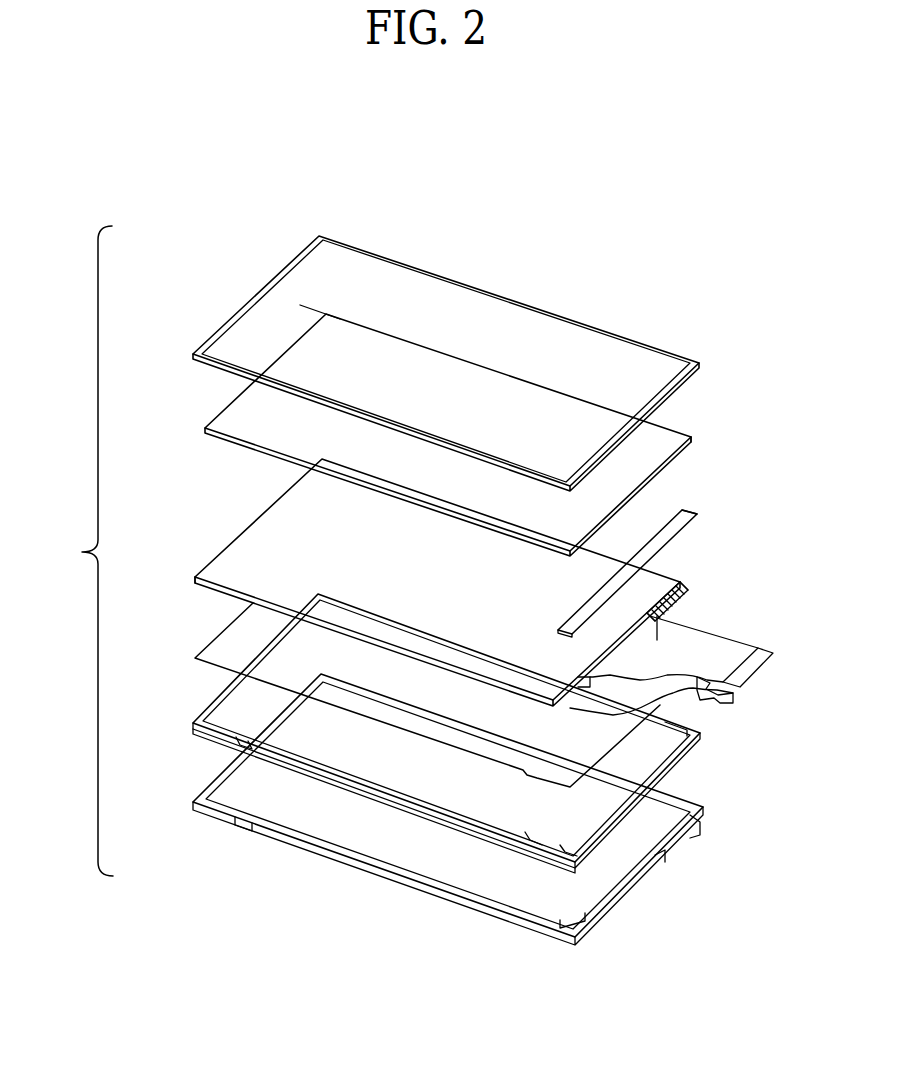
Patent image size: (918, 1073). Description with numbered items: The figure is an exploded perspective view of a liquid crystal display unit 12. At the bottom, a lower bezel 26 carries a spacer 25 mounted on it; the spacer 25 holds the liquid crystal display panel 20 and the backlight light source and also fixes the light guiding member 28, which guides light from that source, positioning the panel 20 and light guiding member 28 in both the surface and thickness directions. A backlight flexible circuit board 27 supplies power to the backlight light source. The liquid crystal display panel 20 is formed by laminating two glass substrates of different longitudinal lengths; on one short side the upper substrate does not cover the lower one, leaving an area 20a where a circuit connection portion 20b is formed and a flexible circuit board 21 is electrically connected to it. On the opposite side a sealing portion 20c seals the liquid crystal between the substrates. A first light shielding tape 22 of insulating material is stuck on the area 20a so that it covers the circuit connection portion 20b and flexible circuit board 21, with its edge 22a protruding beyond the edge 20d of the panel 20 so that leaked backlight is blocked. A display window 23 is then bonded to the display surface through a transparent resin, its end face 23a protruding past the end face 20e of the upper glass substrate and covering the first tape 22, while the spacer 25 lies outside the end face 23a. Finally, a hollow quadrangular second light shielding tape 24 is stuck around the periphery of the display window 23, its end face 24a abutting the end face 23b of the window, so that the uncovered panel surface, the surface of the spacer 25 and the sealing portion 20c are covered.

The liquid crystal display unit 12 is at (77, 551).
The liquid crystal display panel 20 is at (468, 582).
The area 20a is at (705, 600).
The circuit connection portion 20b is at (655, 608).
The sealing portion 20c is at (193, 570).
The edge of the liquid crystal display panel 20d is at (690, 611).
The end face of the upper glass substrate 20e is at (688, 586).
The flexible circuit board 21 is at (760, 668).
The first light shielding tape 22 is at (671, 547).
The edge of the first light shielding tape 22a is at (703, 523).
The display window 23 is at (470, 404).
The end face of the display window 23a is at (700, 452).
The end face of the display window 23b is at (306, 323).
The second light shielding tape 24 is at (424, 344).
The end face of the second light shielding tape 24a is at (306, 265).
The spacer 25 is at (220, 712).
The lower bezel 26 is at (207, 790).
The backlight flexible circuit board 27 is at (700, 700).
The light guiding member 28 is at (208, 652).